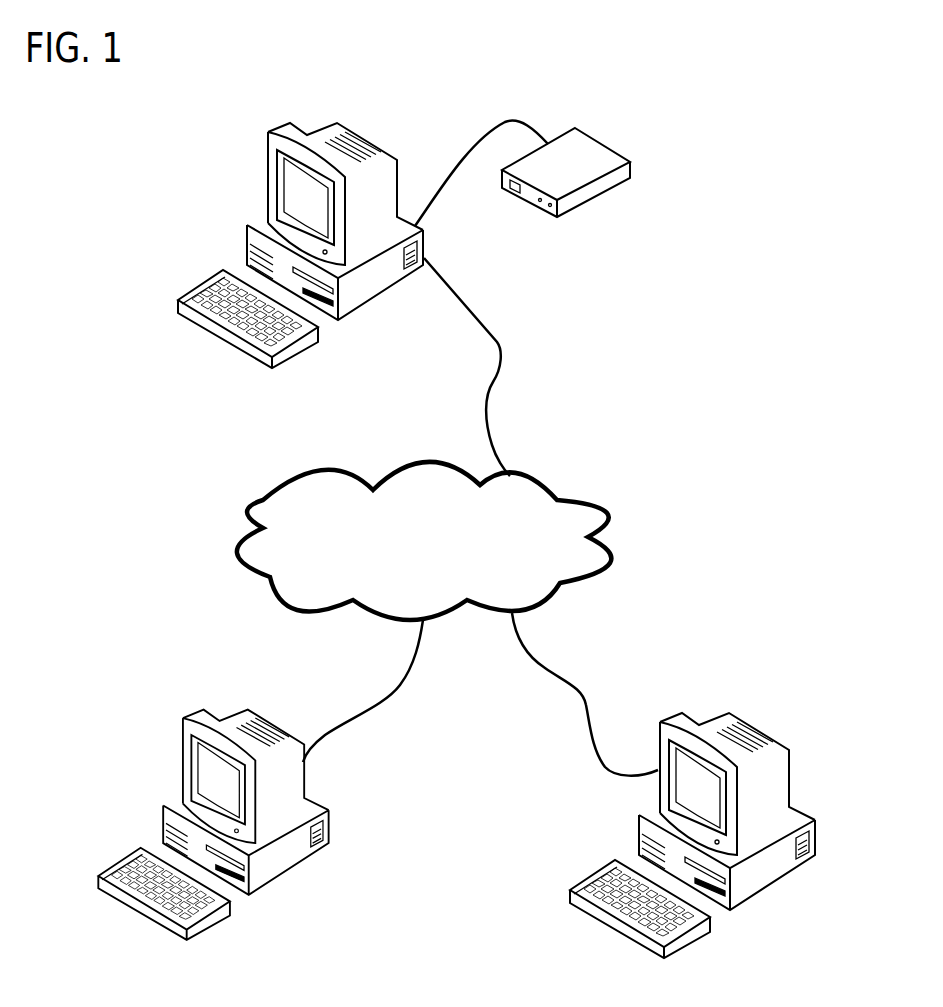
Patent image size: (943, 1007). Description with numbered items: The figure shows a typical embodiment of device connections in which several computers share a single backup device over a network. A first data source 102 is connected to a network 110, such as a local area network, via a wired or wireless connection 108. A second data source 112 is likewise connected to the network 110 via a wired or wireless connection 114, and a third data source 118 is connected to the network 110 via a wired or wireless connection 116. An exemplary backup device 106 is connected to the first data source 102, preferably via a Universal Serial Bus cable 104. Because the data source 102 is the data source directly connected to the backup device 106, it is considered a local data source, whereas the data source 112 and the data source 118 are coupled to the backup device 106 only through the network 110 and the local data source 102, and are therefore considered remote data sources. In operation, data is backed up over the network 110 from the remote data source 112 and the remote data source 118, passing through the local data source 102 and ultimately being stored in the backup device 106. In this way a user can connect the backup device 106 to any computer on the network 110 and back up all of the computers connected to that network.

The data source 102 is at (382, 140).
The Universal Serial Bus (USB) cable 104 is at (503, 116).
The backup device 106 is at (610, 134).
The wired or wireless connection 108 is at (510, 341).
The network 110 is at (615, 498).
The data source 112 is at (274, 711).
The wired or wireless connection 114 is at (400, 681).
The wired or wireless connection 116 is at (602, 704).
The data source 118 is at (785, 728).